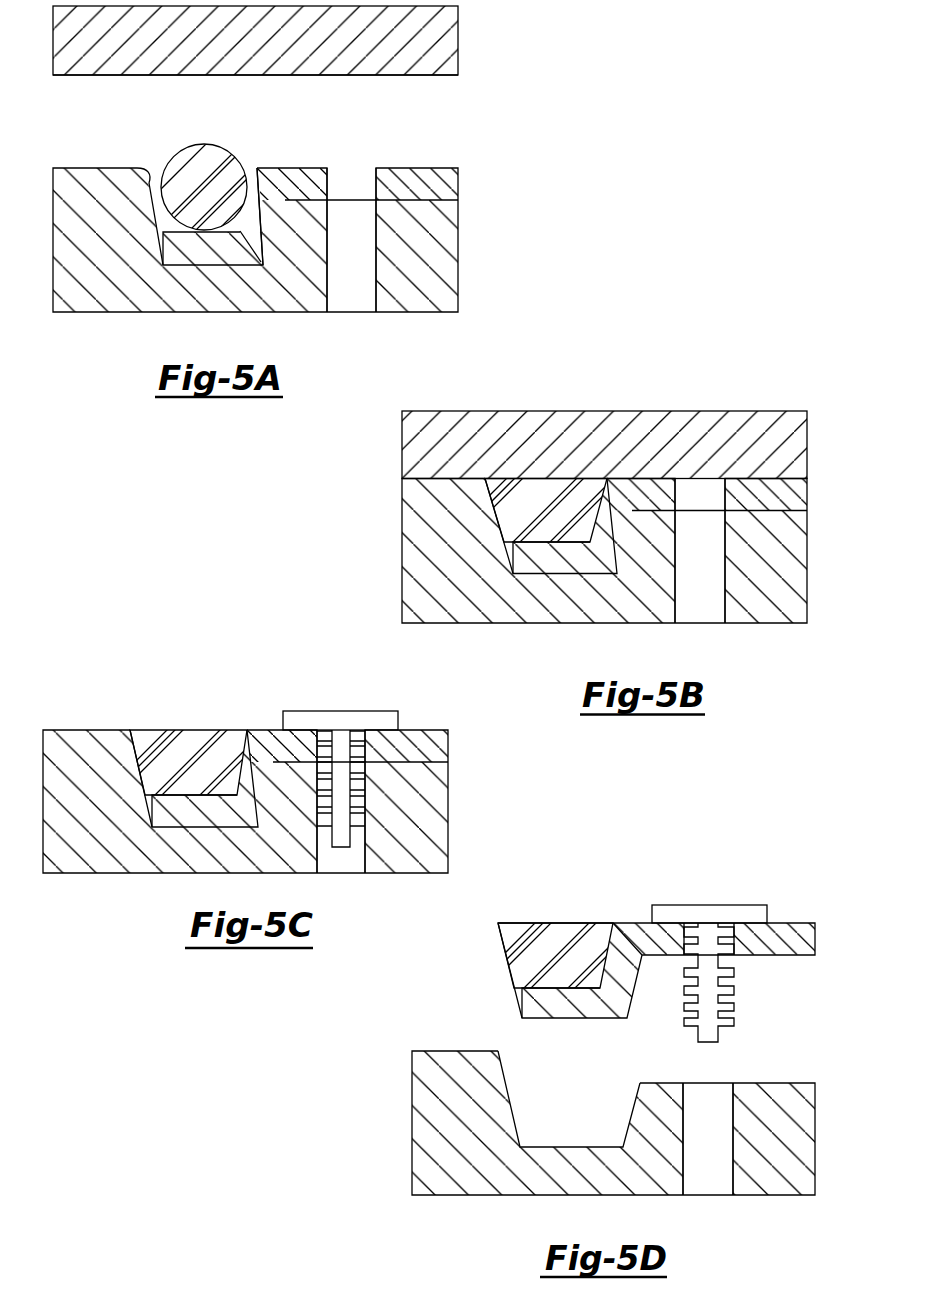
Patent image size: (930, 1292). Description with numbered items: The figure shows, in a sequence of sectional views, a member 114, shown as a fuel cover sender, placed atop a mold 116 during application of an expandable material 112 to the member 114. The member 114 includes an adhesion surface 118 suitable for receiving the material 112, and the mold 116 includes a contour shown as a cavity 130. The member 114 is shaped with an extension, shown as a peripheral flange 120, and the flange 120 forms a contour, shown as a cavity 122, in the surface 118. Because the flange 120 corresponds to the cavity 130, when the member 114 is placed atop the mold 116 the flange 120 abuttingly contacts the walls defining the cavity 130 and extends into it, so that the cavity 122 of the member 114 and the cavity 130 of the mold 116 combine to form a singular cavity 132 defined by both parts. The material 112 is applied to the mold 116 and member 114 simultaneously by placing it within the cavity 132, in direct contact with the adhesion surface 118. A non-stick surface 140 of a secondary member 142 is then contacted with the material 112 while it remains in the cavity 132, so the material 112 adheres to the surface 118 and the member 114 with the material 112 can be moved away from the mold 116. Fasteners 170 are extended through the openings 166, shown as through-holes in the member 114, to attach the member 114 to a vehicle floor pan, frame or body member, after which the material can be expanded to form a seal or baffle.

In FIG. 5A, the material 112 is at (203, 160).
In FIG. 5B, the material 112 is at (510, 532).
In FIG. 5C, the material 112 is at (197, 740).
In FIG. 5D, the material 112 is at (565, 933).
In FIG. 5A, the member 114 is at (447, 188).
In FIG. 5B, the member 114 is at (790, 500).
In FIG. 5C, the member 114 is at (435, 752).
In FIG. 5D, the member 114 is at (800, 947).
In FIG. 5A, the mold 116 is at (447, 265).
In FIG. 5B, the mold 116 is at (763, 615).
In FIG. 5C, the mold 116 is at (412, 865).
In FIG. 5D, the mold 116 is at (780, 1185).
In FIG. 5A, the surface 118 is at (256, 190).
In FIG. 5A, the peripheral flange 120 is at (200, 258).
In FIG. 5B, the peripheral flange 120 is at (565, 526).
In FIG. 5C, the peripheral flange 120 is at (205, 778).
In FIG. 5D, the peripheral flange 120 is at (578, 1003).
In FIG. 5A, the cavity 122 is at (258, 240).
In FIG. 5A, the cavity 130 is at (147, 168).
In FIG. 5A, the singular cavity 132 is at (146, 140).
In FIG. 5B, the singular cavity 132 is at (551, 526).
In FIG. 5C, the singular cavity 132 is at (194, 778).
In FIG. 5D, the singular cavity 132 is at (582, 1118).
In FIG. 5A, the surface 140 is at (330, 77).
In FIG. 5A, the secondary member 142 is at (448, 63).
In FIG. 5B, the secondary member 142 is at (651, 424).
In FIG. 5A, the openings 166 is at (357, 187).
In FIG. 5B, the openings 166 is at (699, 500).
In FIG. 5C, the openings 166 is at (325, 735).
In FIG. 5D, the openings 166 is at (693, 928).
In FIG. 5C, the fasteners 170 is at (343, 676).
In FIG. 5D, the fasteners 170 is at (712, 871).